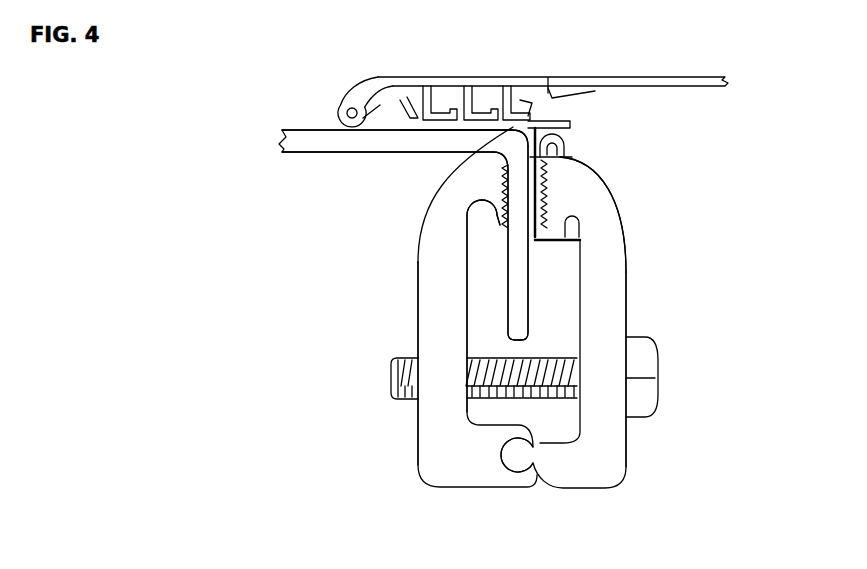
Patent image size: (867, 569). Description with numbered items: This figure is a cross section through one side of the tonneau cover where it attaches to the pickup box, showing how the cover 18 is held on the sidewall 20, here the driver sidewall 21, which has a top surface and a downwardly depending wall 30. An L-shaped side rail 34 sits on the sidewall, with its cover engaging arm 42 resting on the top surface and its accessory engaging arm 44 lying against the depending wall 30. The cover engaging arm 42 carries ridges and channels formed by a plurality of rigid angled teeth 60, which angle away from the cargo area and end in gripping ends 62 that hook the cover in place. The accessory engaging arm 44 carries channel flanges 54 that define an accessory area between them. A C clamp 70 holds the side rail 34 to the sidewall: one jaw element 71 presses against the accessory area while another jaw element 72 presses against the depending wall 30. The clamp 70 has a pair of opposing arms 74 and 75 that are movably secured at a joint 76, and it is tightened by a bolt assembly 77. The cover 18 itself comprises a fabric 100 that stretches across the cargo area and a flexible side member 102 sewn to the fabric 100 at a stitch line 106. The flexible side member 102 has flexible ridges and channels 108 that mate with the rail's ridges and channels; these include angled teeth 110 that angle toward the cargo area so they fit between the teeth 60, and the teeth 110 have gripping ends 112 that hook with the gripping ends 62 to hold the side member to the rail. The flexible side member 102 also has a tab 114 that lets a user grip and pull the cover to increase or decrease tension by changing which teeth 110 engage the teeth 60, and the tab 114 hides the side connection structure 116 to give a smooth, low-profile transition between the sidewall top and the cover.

The cover 18 is at (632, 46).
The fabric 100 is at (693, 82).
The flexible side member 102 is at (498, 88).
The stitch line 106 is at (377, 100).
The flexible ridges and channels 108 is at (427, 92).
The angled teeth 110 is at (442, 98).
The gripping end 112 is at (413, 93).
The tab 114 is at (350, 108).
The side connection structure 116 is at (263, 113).
The sidewall 20 is at (290, 147).
The driver sidewall 21 is at (345, 145).
The depending wall 30 is at (515, 310).
The side rail 34 is at (560, 120).
The cover engaging arm 42 is at (503, 163).
The accessory engaging arm 44 is at (555, 158).
The channel flange 54 is at (567, 145).
The angled teeth 60 is at (433, 123).
The gripping end 62 is at (465, 123).
The C clamp 70 is at (433, 455).
The jaw element 71 is at (557, 203).
The jaw element 72 is at (495, 220).
The opposing arm 74 is at (621, 302).
The opposing arm 75 is at (428, 320).
The joint 76 is at (517, 460).
The bolt assembly 77 is at (642, 384).